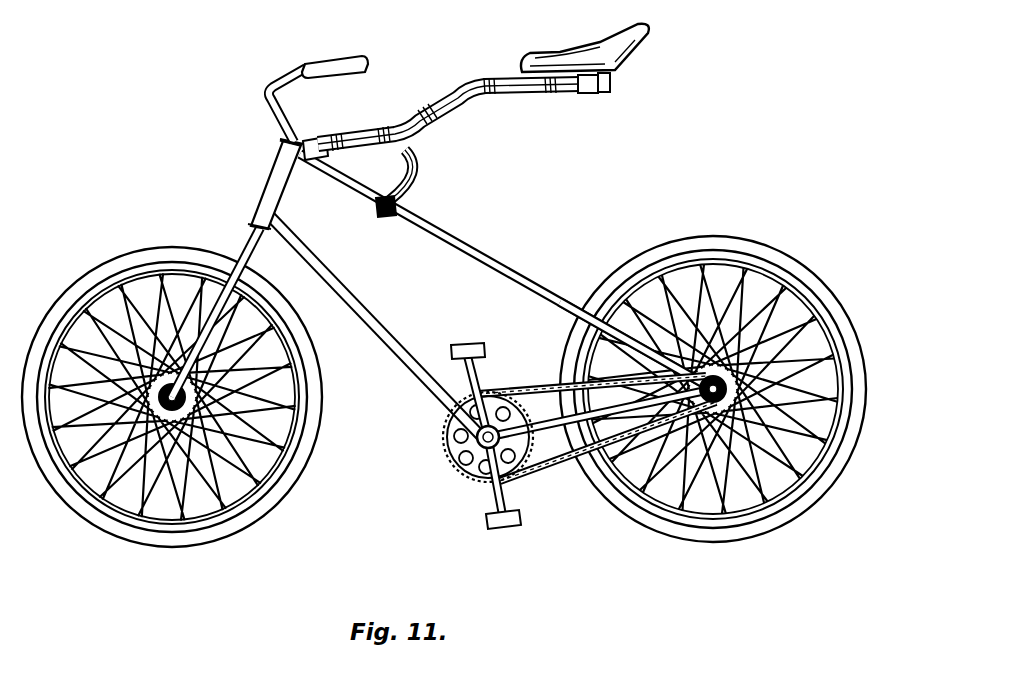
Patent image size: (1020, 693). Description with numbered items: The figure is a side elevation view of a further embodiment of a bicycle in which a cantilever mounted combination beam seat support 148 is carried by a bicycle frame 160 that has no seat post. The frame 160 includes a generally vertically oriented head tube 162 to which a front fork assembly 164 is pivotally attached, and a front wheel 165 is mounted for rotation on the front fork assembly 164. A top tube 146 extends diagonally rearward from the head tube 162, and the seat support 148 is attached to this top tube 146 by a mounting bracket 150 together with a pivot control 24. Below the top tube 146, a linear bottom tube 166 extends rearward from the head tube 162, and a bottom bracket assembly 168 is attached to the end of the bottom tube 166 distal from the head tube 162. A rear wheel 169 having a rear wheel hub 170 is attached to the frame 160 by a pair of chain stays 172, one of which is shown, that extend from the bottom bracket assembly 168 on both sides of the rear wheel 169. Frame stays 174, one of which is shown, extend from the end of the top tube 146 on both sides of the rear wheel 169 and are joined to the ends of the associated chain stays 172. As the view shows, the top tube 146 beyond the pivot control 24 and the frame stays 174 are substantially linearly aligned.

The bicycle frame 160 is at (676, 108).
The front wheel 165 is at (111, 257).
The front fork assembly 164 is at (244, 242).
The head tube 162 is at (259, 183).
The mounting bracket 150 is at (314, 146).
The combination support beam 148 is at (417, 114).
The pivot control 24 is at (412, 174).
The top tube 146 is at (483, 246).
The frame stays 174 is at (606, 326).
The rear wheel 169 is at (774, 252).
The rear wheel hub 170 is at (846, 353).
The linear bottom tube 166 is at (392, 348).
The bottom bracket assembly 168 is at (462, 465).
The chain stays 172 is at (553, 432).